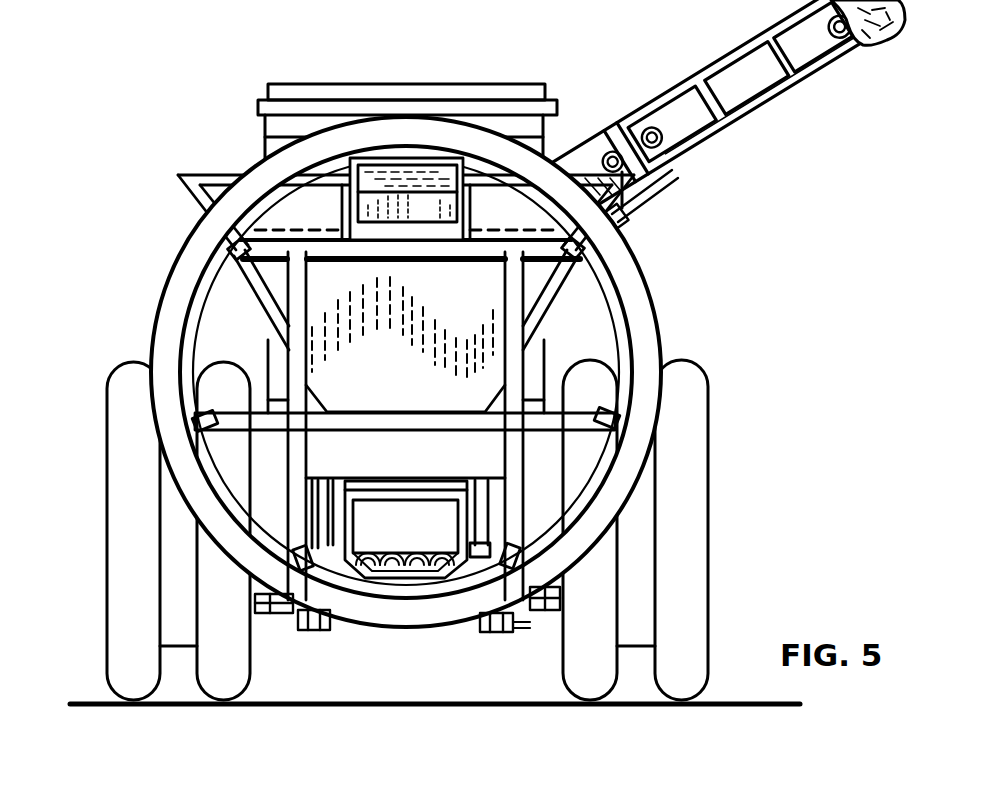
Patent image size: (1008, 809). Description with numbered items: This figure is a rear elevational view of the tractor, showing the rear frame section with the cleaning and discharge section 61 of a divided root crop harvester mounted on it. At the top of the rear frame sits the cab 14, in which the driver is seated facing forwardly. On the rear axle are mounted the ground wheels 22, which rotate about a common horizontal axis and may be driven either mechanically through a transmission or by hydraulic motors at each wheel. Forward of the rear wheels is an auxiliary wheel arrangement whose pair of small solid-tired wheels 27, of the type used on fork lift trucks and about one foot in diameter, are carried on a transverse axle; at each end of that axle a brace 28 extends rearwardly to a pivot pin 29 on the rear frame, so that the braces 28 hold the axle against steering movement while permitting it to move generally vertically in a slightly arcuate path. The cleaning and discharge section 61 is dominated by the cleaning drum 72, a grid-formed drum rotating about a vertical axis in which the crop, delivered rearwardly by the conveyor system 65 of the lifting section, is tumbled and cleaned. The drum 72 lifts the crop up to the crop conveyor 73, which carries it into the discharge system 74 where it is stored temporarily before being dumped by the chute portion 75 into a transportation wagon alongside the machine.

The cab 14 is at (477, 84).
The ground wheels 22 is at (690, 443).
The wheels 27 is at (268, 616).
The brace 28 is at (320, 632).
The pivot pin 29 is at (510, 622).
The cleaning and discharge section 61 is at (146, 270).
The conveyor system 65 is at (405, 518).
The cleaning drum 72 is at (642, 306).
The crop conveyor 73 is at (420, 203).
The discharge system 74 is at (766, 80).
The chute portion 75 is at (216, 176).